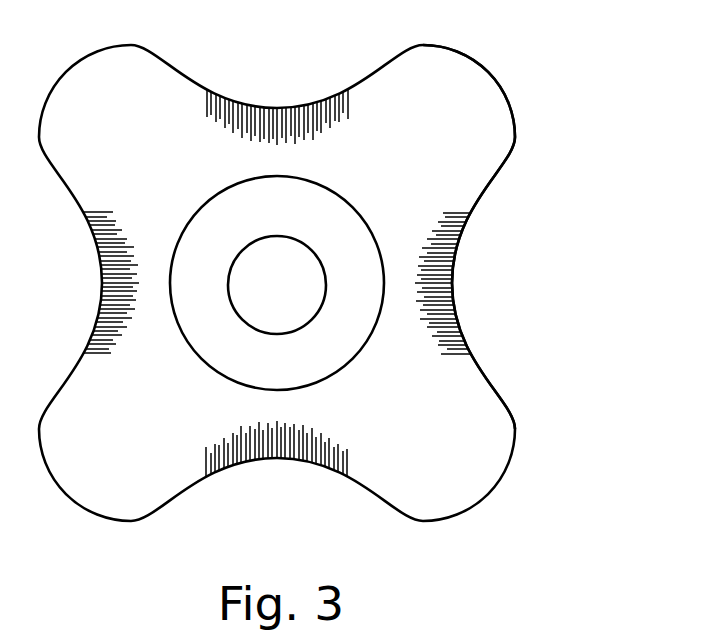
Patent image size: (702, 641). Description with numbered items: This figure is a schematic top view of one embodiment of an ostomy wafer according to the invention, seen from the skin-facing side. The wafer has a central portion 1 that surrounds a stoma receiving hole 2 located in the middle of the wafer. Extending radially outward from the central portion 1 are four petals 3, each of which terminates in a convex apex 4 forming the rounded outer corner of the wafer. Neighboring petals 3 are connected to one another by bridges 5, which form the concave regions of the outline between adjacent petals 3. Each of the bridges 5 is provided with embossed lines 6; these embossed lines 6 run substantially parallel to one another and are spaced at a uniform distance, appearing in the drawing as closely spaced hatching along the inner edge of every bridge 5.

The central portion 1 is at (281, 379).
The stoma receiving hole 2 is at (277, 285).
The petal 3 is at (309, 283).
The convex apex 4 is at (492, 72).
The bridge 5 is at (310, 283).
The embossed lines 6 is at (495, 283).